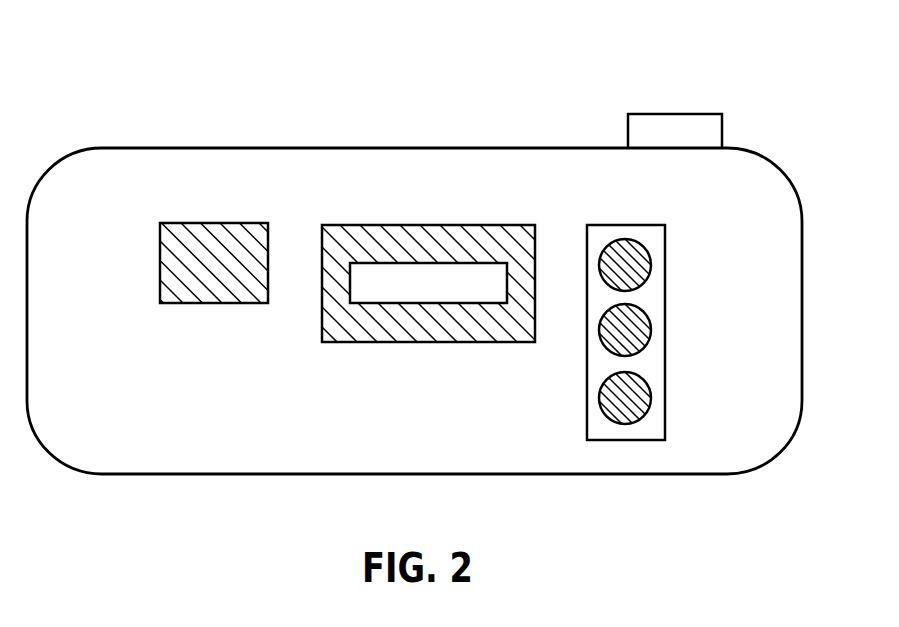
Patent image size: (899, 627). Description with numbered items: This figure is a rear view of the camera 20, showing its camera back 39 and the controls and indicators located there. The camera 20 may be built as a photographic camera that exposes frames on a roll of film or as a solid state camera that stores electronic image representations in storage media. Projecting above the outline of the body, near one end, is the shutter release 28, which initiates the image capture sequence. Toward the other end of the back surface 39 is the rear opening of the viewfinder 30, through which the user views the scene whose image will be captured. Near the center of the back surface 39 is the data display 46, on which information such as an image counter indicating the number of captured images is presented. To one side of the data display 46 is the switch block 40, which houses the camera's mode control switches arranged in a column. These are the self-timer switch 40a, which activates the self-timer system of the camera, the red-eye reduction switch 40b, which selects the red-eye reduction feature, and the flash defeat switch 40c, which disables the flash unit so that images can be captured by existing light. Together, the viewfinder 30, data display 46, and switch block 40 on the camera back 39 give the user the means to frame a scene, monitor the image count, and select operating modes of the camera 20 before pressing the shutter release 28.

The camera 20 is at (325, 104).
The shutter release 28 is at (700, 114).
The viewfinder 30 is at (217, 223).
The camera back 39 is at (110, 329).
The switch block 40 is at (590, 206).
The self-timer switch 40a is at (651, 255).
The red-eye reduction switch 40b is at (650, 317).
The flash defeat switch 40c is at (601, 398).
The data display 46 is at (340, 342).